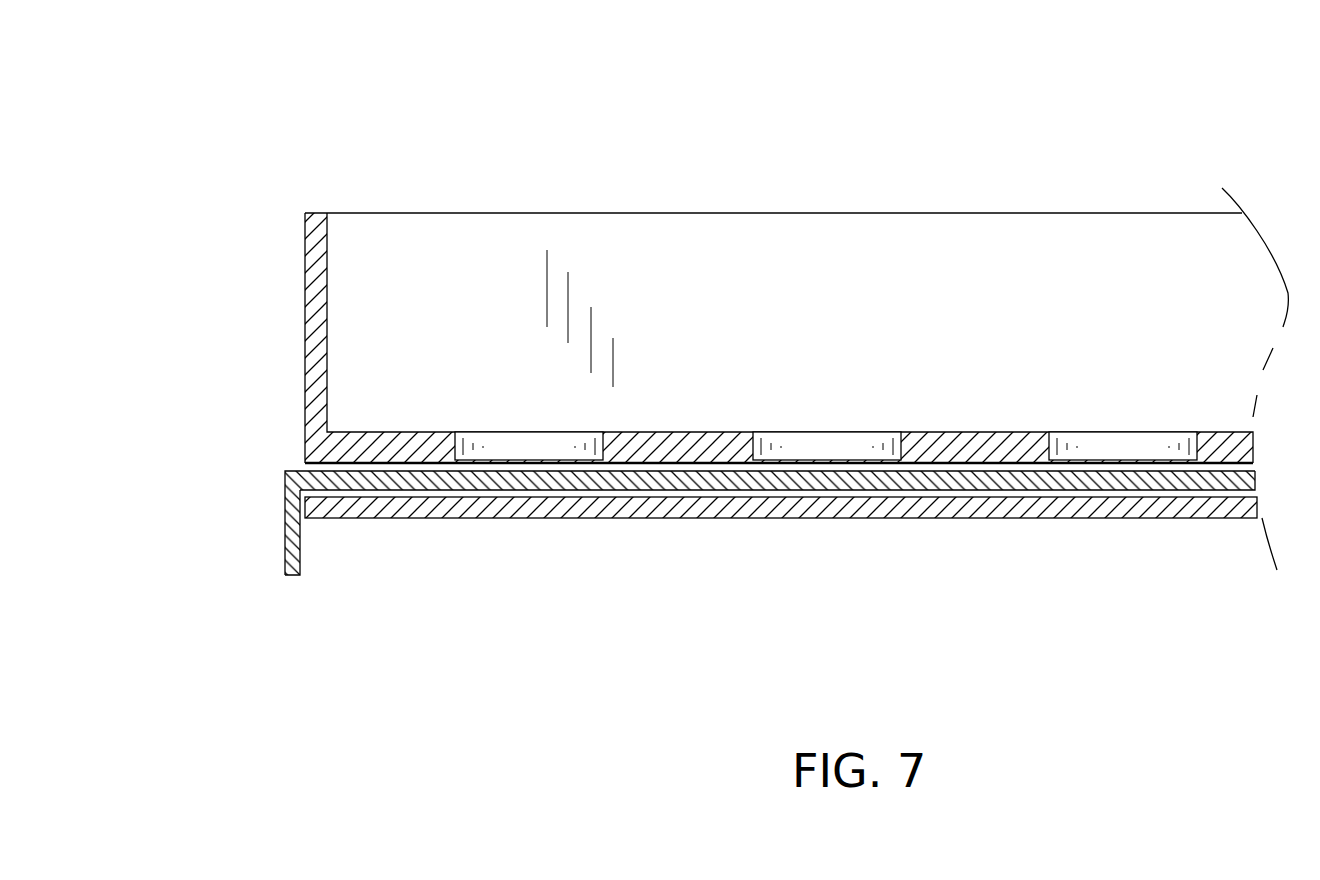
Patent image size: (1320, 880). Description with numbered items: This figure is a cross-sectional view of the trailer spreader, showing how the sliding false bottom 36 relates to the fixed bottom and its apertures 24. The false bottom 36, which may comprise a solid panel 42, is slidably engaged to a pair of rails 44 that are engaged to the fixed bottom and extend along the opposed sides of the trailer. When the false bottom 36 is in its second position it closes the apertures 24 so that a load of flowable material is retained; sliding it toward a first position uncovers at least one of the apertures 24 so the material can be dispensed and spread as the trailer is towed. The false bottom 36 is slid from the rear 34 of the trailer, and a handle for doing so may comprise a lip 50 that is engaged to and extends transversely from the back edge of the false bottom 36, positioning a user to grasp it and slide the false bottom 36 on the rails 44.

The apertures 24 is at (1086, 427).
The rear 34 is at (289, 290).
The false bottom 36 is at (687, 494).
The solid panel 42 is at (581, 498).
The rails 44 is at (467, 536).
The lip 50 is at (273, 529).